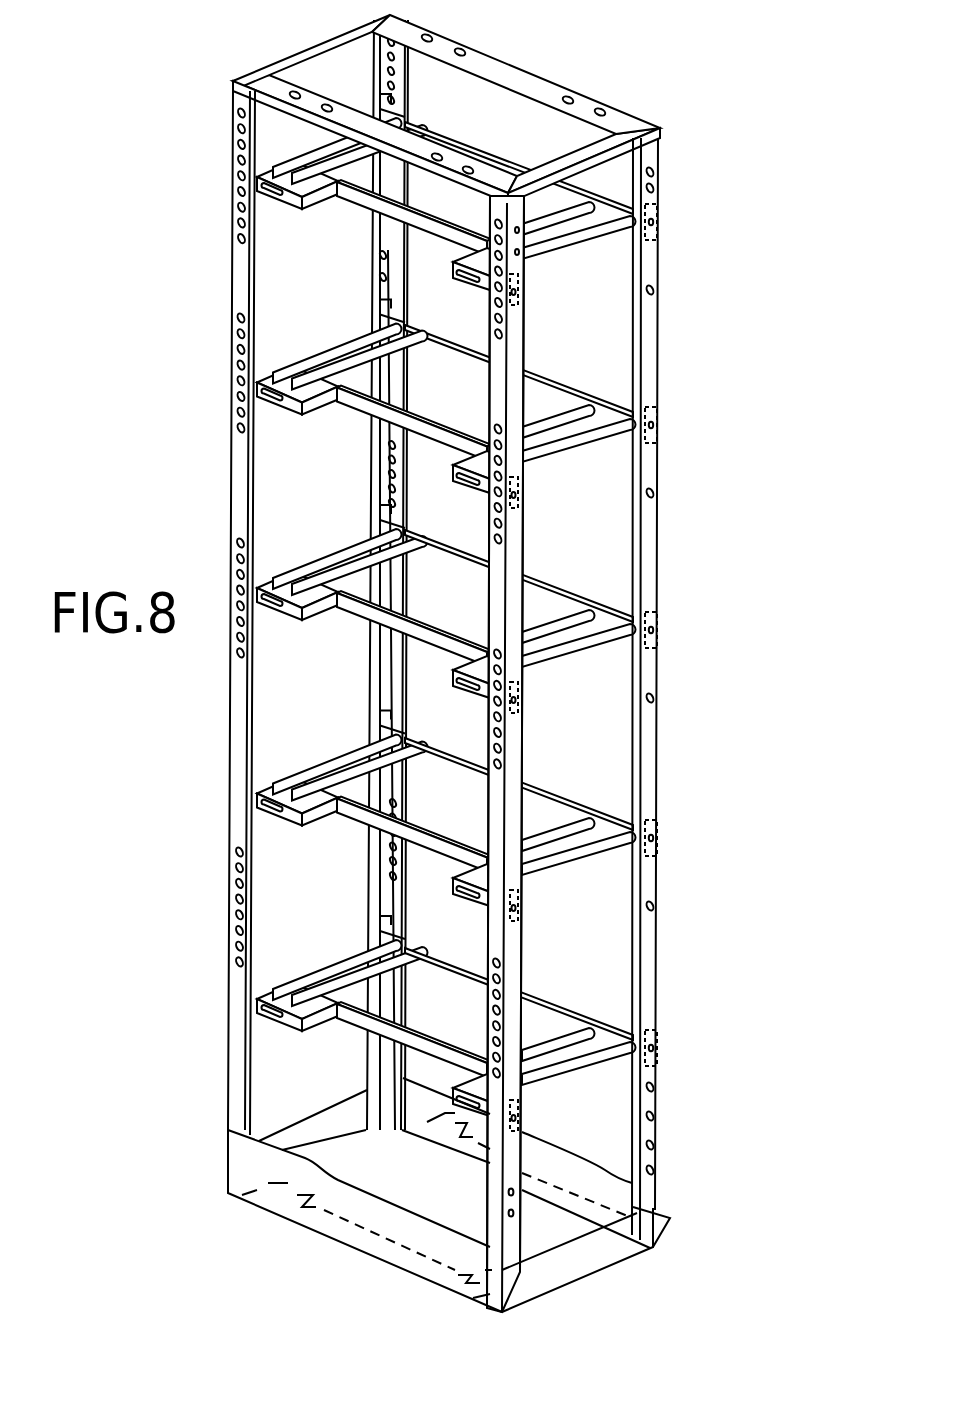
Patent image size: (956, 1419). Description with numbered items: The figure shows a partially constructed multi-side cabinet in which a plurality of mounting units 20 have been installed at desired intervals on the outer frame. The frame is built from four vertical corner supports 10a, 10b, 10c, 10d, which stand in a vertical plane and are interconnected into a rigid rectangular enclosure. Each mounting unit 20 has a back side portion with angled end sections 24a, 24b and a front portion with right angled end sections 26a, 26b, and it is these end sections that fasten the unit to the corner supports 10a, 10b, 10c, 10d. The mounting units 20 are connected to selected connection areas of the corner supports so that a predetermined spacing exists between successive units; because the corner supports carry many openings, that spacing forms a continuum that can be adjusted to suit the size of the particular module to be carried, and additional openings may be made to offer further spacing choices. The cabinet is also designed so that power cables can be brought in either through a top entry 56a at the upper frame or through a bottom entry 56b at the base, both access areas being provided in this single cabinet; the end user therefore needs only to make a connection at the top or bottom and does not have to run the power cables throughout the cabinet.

The corner support 10a is at (240, 130).
The corner support 10b is at (377, 63).
The corner support 10c is at (662, 184).
The corner support 10d is at (525, 338).
The mounting unit 20 is at (627, 415).
The angled end section 24a is at (654, 423).
The angled end section 24b is at (383, 292).
The right angled end section 26a is at (517, 492).
The right angled end section 26b is at (240, 378).
The top entry 56a is at (503, 103).
The bottom entry 56b is at (557, 1242).